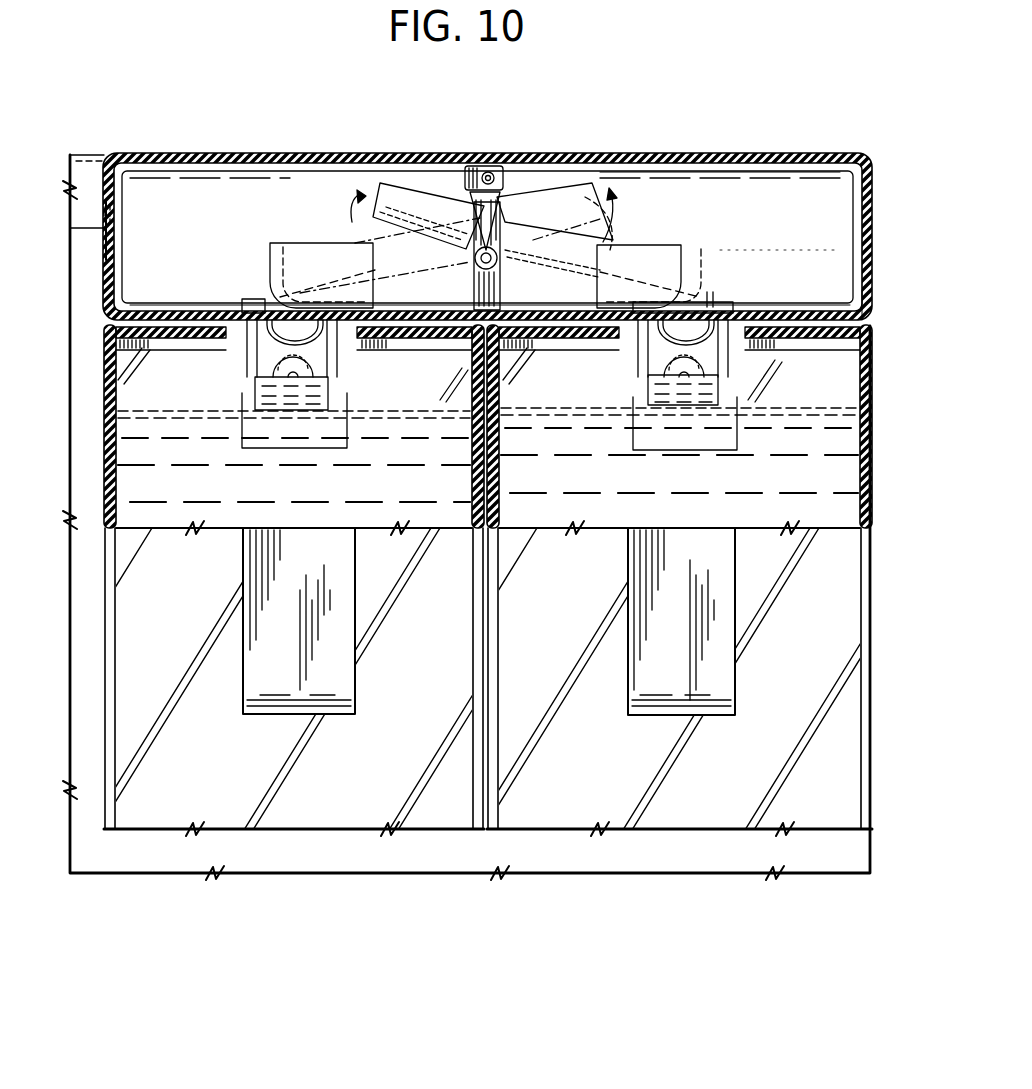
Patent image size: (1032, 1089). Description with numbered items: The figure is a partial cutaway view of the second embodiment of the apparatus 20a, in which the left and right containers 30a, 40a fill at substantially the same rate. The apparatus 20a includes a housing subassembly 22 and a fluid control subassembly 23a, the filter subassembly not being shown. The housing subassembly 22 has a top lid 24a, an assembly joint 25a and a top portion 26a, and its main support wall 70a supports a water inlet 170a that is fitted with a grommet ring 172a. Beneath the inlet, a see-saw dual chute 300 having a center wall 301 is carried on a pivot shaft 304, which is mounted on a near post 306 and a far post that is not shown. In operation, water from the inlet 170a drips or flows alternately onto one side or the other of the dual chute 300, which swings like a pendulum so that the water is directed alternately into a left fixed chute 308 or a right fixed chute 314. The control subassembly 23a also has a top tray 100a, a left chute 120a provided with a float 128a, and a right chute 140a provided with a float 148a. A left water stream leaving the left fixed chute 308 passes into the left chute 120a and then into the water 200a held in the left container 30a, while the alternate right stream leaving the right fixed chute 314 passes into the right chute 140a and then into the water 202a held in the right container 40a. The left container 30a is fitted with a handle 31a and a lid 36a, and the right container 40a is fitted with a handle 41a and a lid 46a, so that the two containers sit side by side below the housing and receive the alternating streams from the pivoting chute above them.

The apparatus 20a is at (662, 78).
The housing subassembly 22 is at (336, 870).
The top lid 24a is at (292, 155).
The assembly joint 25a is at (66, 154).
The top portion 26a is at (116, 246).
The top tray 100a is at (189, 300).
The main support wall 70a is at (667, 182).
The lid 46a is at (873, 327).
The fluid control subassembly 23a is at (713, 242).
The left fixed chute 308 is at (290, 243).
The right fixed chute 314 is at (673, 247).
The water inlet 170a is at (500, 166).
The grommet ring 172a is at (456, 192).
The see-saw dual chute 300 is at (397, 183).
The center wall 301 is at (505, 180).
The pivot shaft 304 is at (477, 262).
The near post 306 is at (497, 294).
The left container 30a is at (182, 803).
The right container 40a is at (673, 813).
The lid 36a is at (193, 345).
The left chute 120a is at (320, 350).
The float 128a is at (280, 403).
The water 200a is at (433, 497).
The handle 31a is at (260, 645).
The right chute 140a is at (703, 343).
The float 148a is at (677, 393).
The fluid or water 202a is at (813, 508).
The handle 41a is at (735, 675).